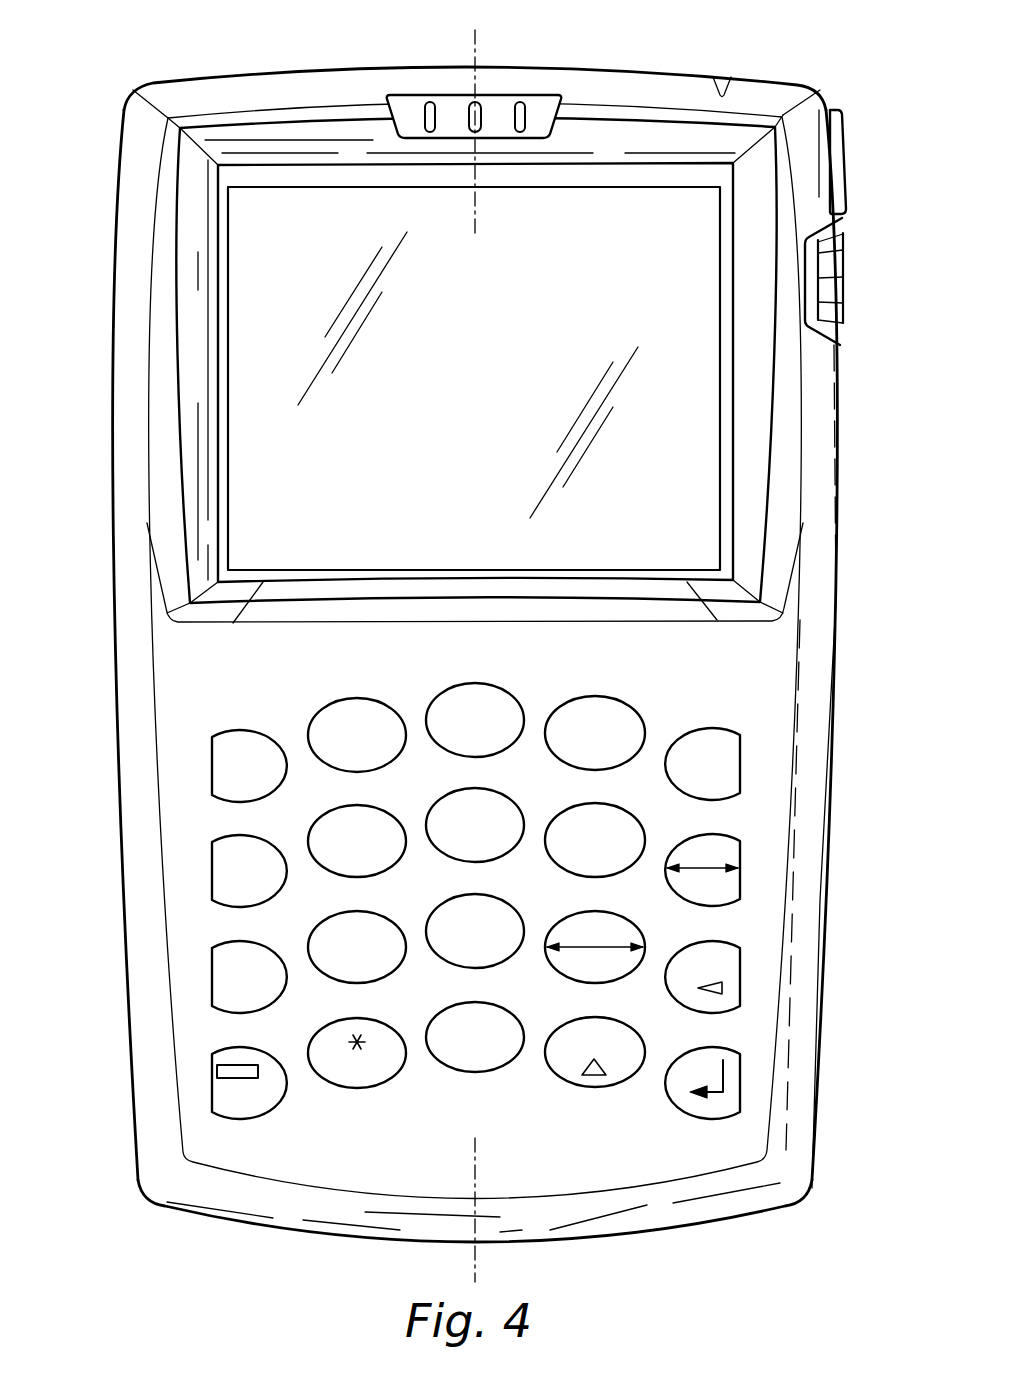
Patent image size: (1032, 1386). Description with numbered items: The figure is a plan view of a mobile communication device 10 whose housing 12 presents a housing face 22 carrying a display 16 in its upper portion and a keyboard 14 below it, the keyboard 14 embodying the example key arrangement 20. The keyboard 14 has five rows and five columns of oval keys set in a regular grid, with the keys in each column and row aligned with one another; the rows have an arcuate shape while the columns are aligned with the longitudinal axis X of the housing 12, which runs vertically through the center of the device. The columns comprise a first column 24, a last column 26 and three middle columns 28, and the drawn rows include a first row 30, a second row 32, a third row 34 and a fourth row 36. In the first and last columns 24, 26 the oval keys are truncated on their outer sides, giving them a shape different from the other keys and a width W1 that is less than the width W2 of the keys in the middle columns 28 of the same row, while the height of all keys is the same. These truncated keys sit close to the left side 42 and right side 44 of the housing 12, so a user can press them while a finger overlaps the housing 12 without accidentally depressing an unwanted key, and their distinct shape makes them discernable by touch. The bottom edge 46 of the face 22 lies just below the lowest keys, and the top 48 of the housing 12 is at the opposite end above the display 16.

The mobile communication device 10 is at (464, 646).
The housing 12 is at (464, 646).
The keyboard 14 is at (740, 972).
The display 16 is at (407, 443).
The key arrangement 20 is at (480, 875).
The housing face 22 is at (653, 1168).
The first column 24 is at (248, 733).
The last column 26 is at (715, 733).
The middle columns 28 is at (360, 698).
The first row 30 is at (212, 775).
The second row 32 is at (212, 876).
The third row 34 is at (212, 988).
The fourth row 36 is at (213, 1087).
The left side 42 is at (112, 680).
The right side 44 is at (836, 720).
The bottom edge 46 is at (323, 1235).
The top of the housing 48 is at (643, 70).
The width of outer-column keys W1 is at (707, 866).
The width of middle-column keys W2 is at (608, 950).
The longitudinal axis X is at (478, 40).